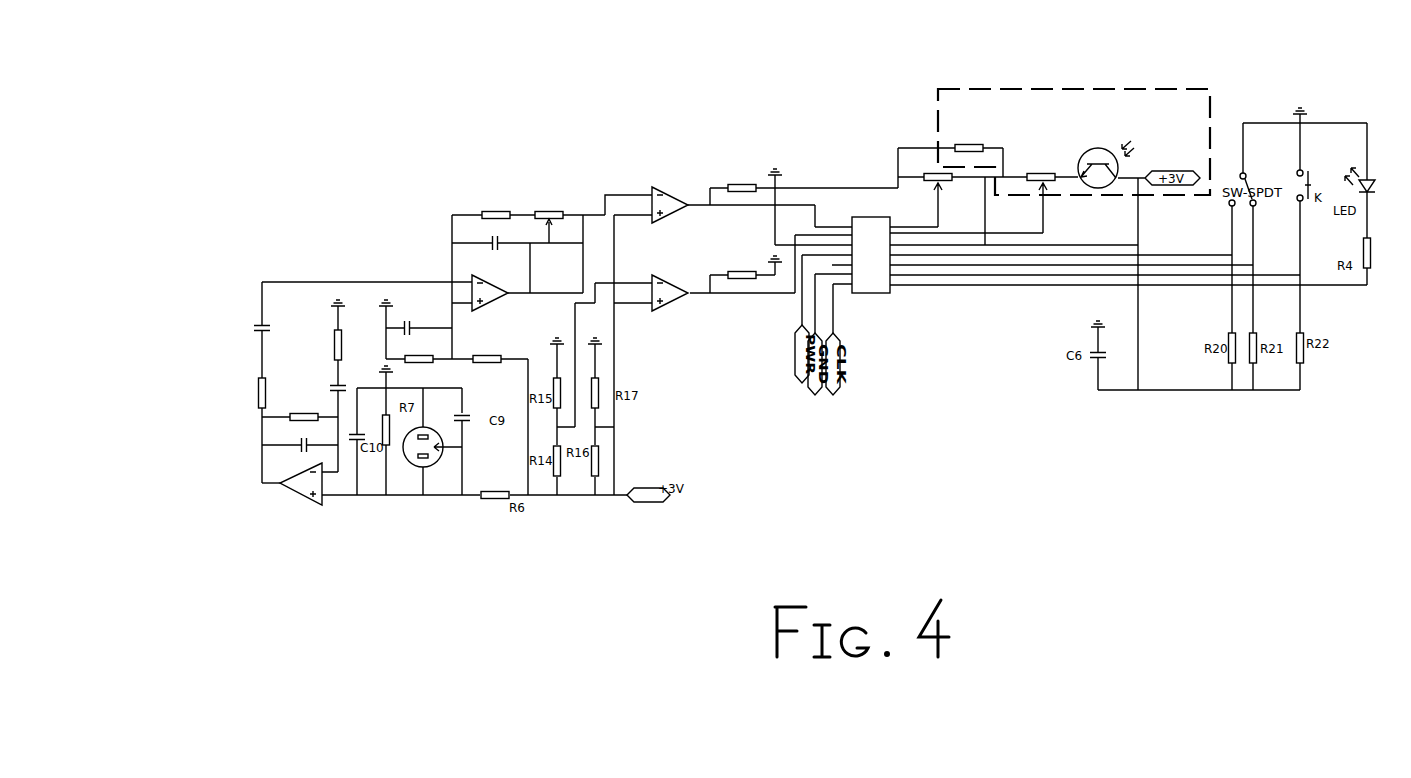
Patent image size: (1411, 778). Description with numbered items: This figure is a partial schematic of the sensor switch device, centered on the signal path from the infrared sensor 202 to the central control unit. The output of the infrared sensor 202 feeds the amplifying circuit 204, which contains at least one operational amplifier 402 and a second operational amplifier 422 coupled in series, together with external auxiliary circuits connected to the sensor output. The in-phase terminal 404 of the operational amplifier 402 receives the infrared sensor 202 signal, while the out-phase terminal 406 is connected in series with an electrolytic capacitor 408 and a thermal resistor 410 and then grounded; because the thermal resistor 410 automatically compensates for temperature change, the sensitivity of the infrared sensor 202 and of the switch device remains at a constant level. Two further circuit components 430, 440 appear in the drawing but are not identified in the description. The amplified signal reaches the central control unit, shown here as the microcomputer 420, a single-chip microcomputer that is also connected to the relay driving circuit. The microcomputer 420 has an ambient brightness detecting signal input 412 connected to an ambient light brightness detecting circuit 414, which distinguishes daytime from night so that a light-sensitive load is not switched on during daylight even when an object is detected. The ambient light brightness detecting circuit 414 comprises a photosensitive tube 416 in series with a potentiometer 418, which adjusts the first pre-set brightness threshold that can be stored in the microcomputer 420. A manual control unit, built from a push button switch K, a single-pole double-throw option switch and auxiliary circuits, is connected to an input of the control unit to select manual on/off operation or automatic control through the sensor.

The infrared sensor 202 is at (422, 468).
The amplifying circuit 204 is at (244, 285).
The operational amplifier 402 is at (272, 502).
The in-phase terminal 404 is at (323, 500).
The out-phase terminal 406 is at (328, 478).
The electrolytic capacitor 408 is at (338, 383).
The thermal resistor 410 is at (340, 333).
The ambient brightness detecting signal input 412 is at (955, 237).
The ambient light brightness detecting circuit 414 is at (1205, 89).
The photosensitive tube 416 is at (1096, 148).
The potentiometer 418 is at (1048, 187).
The microcomputer 420 is at (890, 293).
The operational amplifier 422 is at (490, 280).
The third operational amplifier (comparator) 430 is at (676, 160).
The fourth operational amplifier (comparator) 440 is at (658, 312).